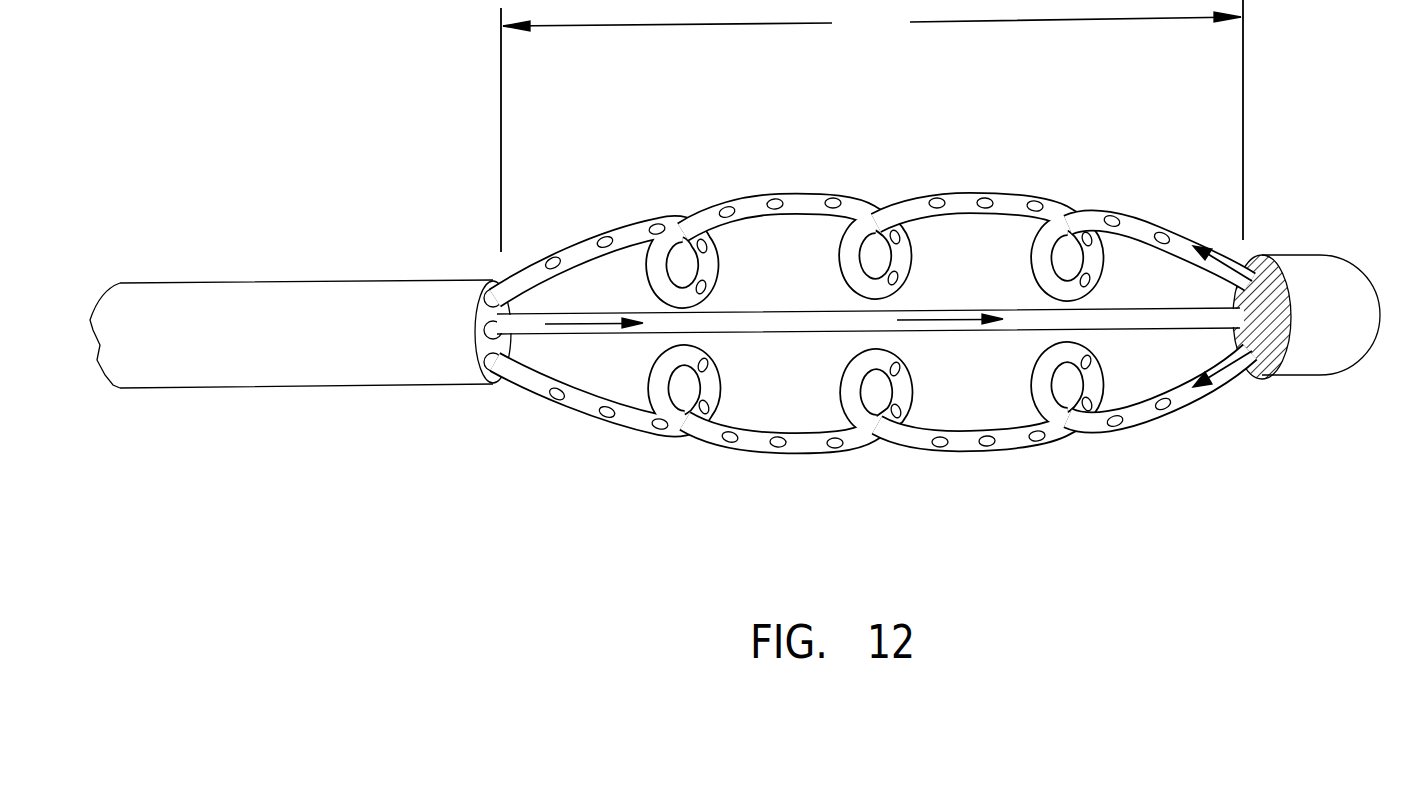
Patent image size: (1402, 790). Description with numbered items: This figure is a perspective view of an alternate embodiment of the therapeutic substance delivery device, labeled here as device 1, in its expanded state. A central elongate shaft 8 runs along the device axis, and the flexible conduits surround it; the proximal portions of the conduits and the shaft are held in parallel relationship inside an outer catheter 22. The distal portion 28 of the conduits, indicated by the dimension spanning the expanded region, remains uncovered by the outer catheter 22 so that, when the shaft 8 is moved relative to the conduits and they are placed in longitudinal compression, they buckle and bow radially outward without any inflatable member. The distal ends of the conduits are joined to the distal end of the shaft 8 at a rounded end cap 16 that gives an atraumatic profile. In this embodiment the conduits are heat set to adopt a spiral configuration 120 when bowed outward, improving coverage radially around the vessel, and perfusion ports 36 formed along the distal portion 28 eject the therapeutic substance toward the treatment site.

The catheter device 1 is at (851, 126).
The elongate shaft 8 is at (1130, 320).
The end cap 16 is at (1322, 287).
The outer catheter 22 is at (242, 320).
The distal portion 28 is at (872, 25).
The perfusion ports 36 is at (1035, 198).
The spiral configuration 120 is at (1012, 437).